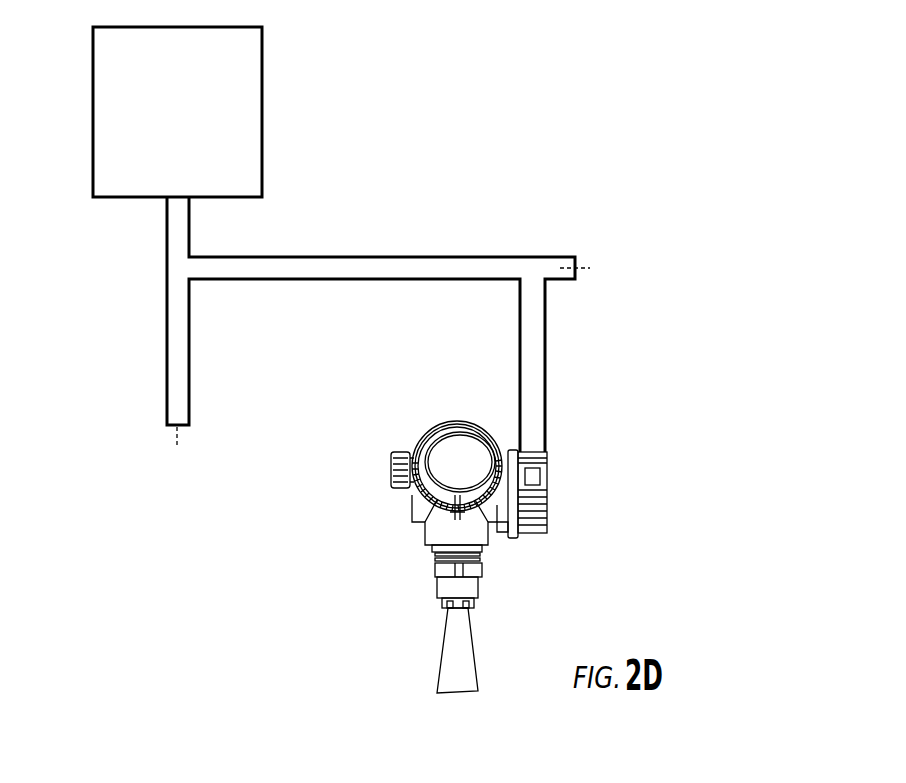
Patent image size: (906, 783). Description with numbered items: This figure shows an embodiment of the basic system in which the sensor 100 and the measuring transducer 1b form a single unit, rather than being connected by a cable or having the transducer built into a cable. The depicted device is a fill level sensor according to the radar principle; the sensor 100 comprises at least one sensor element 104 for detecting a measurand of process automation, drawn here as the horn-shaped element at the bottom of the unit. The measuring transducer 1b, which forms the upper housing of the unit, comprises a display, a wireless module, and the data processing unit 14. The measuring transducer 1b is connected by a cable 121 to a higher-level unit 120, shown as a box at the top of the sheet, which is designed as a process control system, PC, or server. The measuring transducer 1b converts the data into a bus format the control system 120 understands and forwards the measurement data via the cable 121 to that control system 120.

The higher-level unit 120 is at (235, 137).
The cable 121 is at (150, 274).
The sensor 100 is at (524, 563).
The measuring transducer 1b is at (388, 511).
The data processing unit 14 is at (428, 446).
The sensor element 104 is at (452, 648).